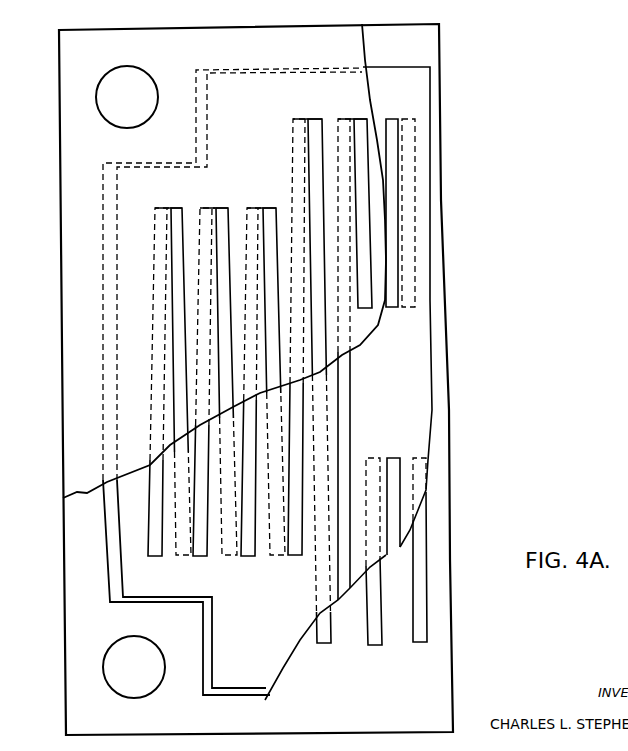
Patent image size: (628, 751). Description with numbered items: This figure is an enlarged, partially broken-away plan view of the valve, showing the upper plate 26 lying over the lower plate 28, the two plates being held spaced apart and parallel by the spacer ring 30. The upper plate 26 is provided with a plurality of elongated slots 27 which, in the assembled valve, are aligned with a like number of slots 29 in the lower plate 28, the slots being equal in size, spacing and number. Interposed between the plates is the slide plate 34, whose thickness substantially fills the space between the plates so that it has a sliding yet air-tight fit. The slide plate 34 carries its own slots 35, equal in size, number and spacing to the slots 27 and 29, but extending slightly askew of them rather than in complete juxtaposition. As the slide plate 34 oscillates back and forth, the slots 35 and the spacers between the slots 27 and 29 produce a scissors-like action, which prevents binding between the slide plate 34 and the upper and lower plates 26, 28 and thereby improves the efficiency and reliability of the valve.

The upper plate 26 is at (63, 289).
The elongated slots 27 is at (312, 172).
The lower plate 28 is at (445, 447).
The slots 29 is at (409, 285).
The spacer ring 30 is at (283, 663).
The slide plate 34 is at (420, 395).
The slots 35 is at (203, 286).